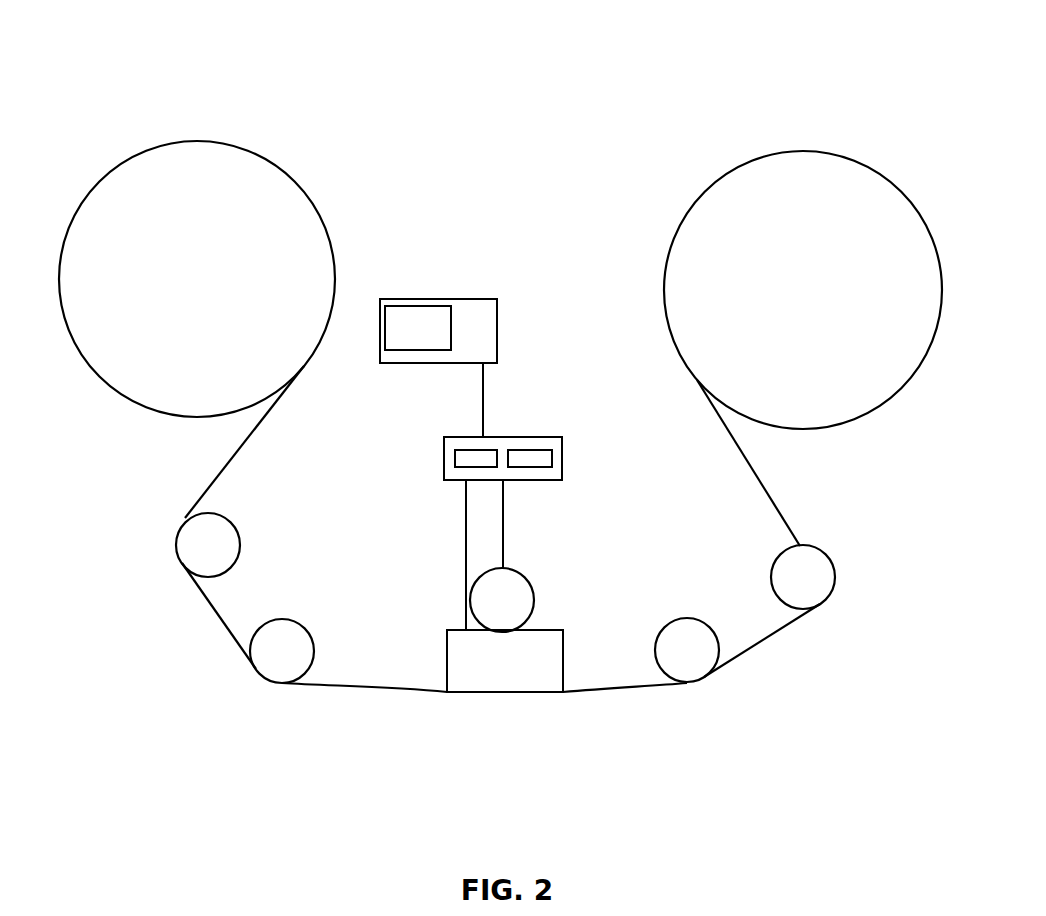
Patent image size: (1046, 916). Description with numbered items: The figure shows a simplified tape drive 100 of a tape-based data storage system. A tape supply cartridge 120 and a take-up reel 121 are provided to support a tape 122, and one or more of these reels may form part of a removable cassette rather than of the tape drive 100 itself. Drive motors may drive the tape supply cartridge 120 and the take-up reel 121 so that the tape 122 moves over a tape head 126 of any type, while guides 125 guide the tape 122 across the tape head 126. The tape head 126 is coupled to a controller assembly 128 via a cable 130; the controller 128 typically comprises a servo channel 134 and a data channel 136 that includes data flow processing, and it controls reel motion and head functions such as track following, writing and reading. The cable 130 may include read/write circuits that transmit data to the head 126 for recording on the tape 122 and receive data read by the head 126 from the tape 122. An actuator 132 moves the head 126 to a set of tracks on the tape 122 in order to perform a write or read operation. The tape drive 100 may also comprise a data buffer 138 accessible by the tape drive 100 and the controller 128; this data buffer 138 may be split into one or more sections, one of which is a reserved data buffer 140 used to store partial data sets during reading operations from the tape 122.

The tape drive 100 is at (540, 112).
The tape supply cartridge 120 is at (325, 223).
The take-up reel 121 is at (860, 420).
The tape 122 is at (368, 690).
The guides 125 is at (282, 618).
The tape head 126 is at (565, 662).
The controller assembly 128 is at (500, 437).
The cable 130 is at (466, 598).
The actuator 132 is at (525, 572).
The servo channel 134 is at (540, 450).
The data channel 136 is at (466, 450).
The data buffer 138 is at (447, 299).
The reserved data buffer 140 is at (418, 328).